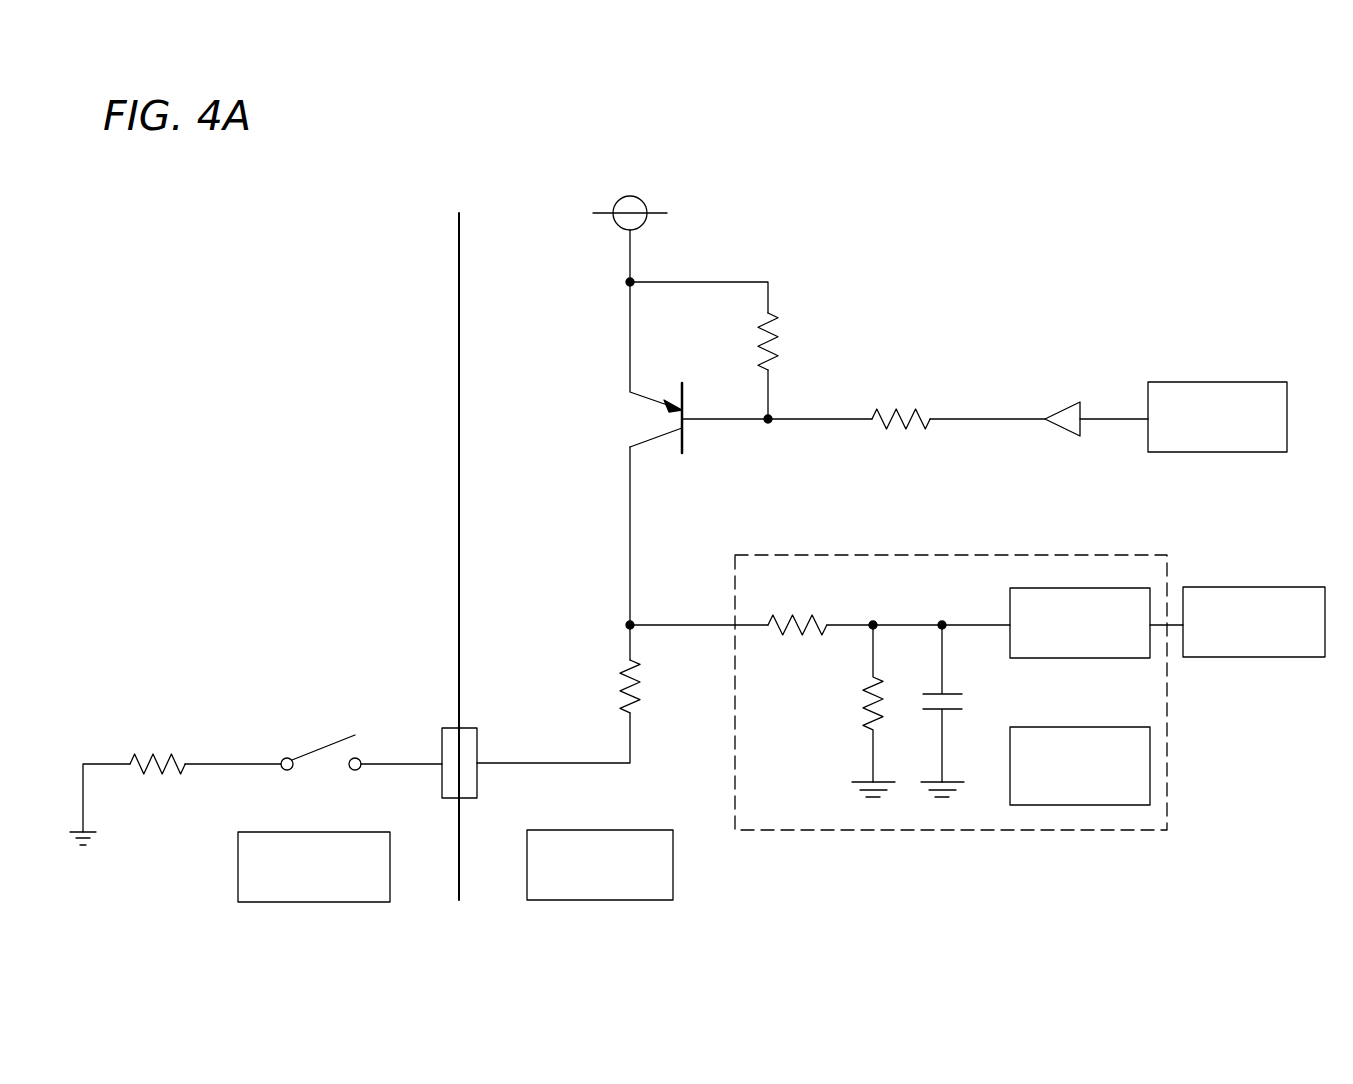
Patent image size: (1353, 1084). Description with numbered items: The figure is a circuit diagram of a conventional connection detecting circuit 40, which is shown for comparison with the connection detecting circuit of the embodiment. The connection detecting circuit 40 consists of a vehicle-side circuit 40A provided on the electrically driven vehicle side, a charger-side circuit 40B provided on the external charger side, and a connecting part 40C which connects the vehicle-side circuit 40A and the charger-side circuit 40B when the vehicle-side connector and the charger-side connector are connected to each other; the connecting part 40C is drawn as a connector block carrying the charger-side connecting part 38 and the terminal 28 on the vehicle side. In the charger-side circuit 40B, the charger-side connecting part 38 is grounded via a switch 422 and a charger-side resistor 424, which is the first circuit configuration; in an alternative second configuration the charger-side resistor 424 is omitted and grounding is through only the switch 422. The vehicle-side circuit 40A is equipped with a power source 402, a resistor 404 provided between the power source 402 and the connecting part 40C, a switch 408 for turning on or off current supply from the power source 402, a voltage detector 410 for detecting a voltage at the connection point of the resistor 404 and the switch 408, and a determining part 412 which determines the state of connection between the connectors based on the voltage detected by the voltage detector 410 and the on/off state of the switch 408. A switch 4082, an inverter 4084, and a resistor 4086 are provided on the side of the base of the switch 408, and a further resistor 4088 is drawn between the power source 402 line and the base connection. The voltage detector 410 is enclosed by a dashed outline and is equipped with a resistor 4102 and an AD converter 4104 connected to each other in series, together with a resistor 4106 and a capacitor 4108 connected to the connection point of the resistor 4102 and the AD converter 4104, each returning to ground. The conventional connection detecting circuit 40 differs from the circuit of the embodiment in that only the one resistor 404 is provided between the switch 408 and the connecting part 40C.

The connection detecting circuit 40 is at (478, 197).
The vehicle-side circuit 40A is at (984, 268).
The charger-side circuit 40B is at (218, 315).
The connecting part 40C is at (512, 700).
The charger-side connecting part 38 is at (447, 728).
The charger-side connector terminal 28 is at (468, 728).
The power source 402 is at (648, 207).
The resistor 404 is at (637, 700).
The switch 408 is at (683, 395).
The switch 4082 is at (1210, 382).
The inverter 4084 is at (1062, 400).
The resistor 4086 is at (905, 410).
The resistor 4088 is at (773, 345).
The voltage detector 410 is at (1012, 555).
The resistor 4102 is at (797, 612).
The AD converter 4104 is at (1077, 588).
The resistor 4106 is at (872, 703).
The capacitor 4108 is at (963, 703).
The determining part 412 is at (1248, 587).
The switch 422 is at (287, 757).
The charger-side resistor 424 is at (133, 750).